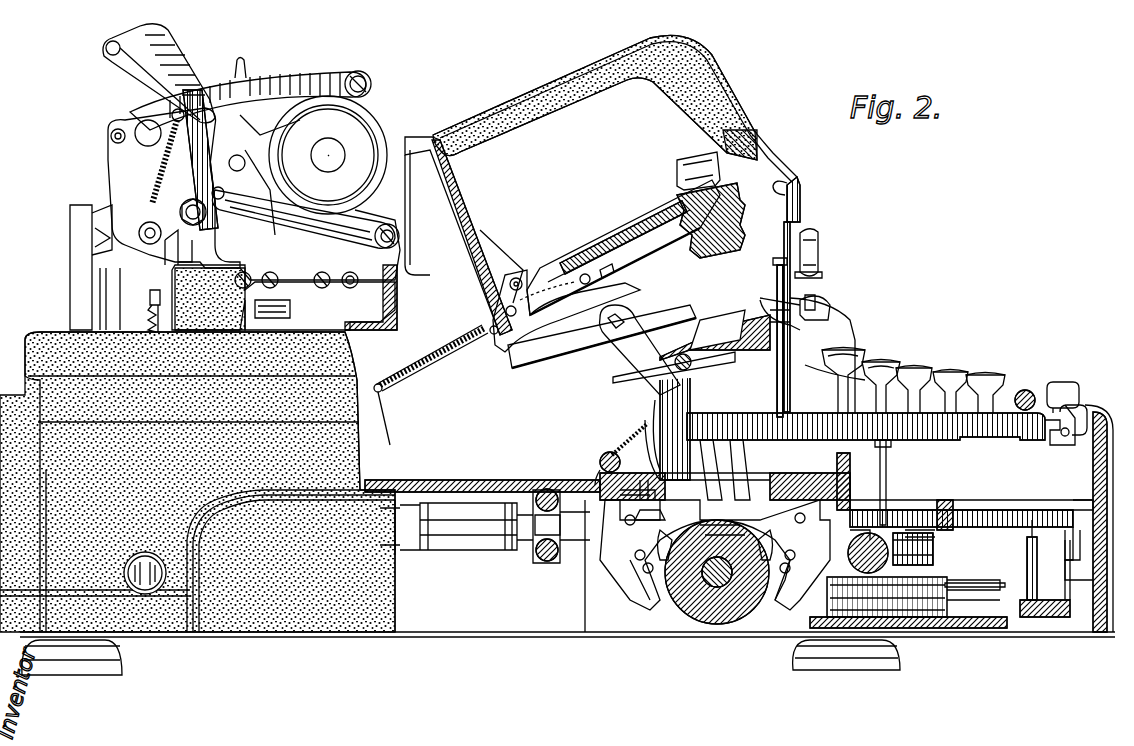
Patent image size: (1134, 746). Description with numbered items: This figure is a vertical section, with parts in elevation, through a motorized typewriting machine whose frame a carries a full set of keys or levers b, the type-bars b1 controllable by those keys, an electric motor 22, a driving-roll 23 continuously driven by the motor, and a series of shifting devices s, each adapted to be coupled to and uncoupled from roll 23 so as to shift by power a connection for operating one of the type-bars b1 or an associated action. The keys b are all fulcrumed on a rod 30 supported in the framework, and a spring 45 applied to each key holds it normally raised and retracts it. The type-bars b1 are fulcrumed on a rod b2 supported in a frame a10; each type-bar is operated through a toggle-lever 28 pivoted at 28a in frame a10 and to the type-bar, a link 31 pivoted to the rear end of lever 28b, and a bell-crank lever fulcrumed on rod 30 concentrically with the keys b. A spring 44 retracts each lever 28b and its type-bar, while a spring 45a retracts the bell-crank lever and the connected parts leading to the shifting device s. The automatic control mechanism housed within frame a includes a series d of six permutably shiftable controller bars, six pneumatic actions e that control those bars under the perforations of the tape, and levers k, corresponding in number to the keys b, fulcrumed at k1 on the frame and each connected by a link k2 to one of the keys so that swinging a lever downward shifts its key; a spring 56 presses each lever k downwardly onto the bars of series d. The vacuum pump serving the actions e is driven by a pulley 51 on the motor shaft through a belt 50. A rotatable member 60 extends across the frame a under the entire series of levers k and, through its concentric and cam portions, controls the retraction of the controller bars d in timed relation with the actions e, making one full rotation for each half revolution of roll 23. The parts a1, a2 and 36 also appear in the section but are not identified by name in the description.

The frame a is at (478, 490).
The carriage arm a1 is at (254, 140).
The carriage roller wheel a2 is at (368, 128).
The frame a10 is at (485, 245).
The keys or levers b is at (803, 413).
The type-bars b1 is at (680, 172).
The rod b2 is at (519, 272).
The series of controller bars d is at (913, 525).
The pneumatic actions e is at (919, 593).
The levers k is at (977, 510).
The fulcrum k1 is at (1075, 510).
The link k2 is at (888, 466).
The shifting devices s is at (617, 592).
The electric motor 22 is at (410, 555).
The driving-roll 23 is at (740, 607).
The toggle-lever 28 is at (640, 252).
The pivot 28a is at (712, 240).
The lever 28b is at (565, 288).
The rod 30 is at (660, 390).
The link 31 is at (572, 345).
The frame 36 is at (648, 597).
The spring 44 is at (442, 372).
The spring 45 is at (779, 386).
The spring 45a is at (640, 432).
The belt 50 is at (547, 565).
The pulley 51 is at (533, 553).
The spring 56 is at (1025, 552).
The rotatable member 60 is at (845, 545).